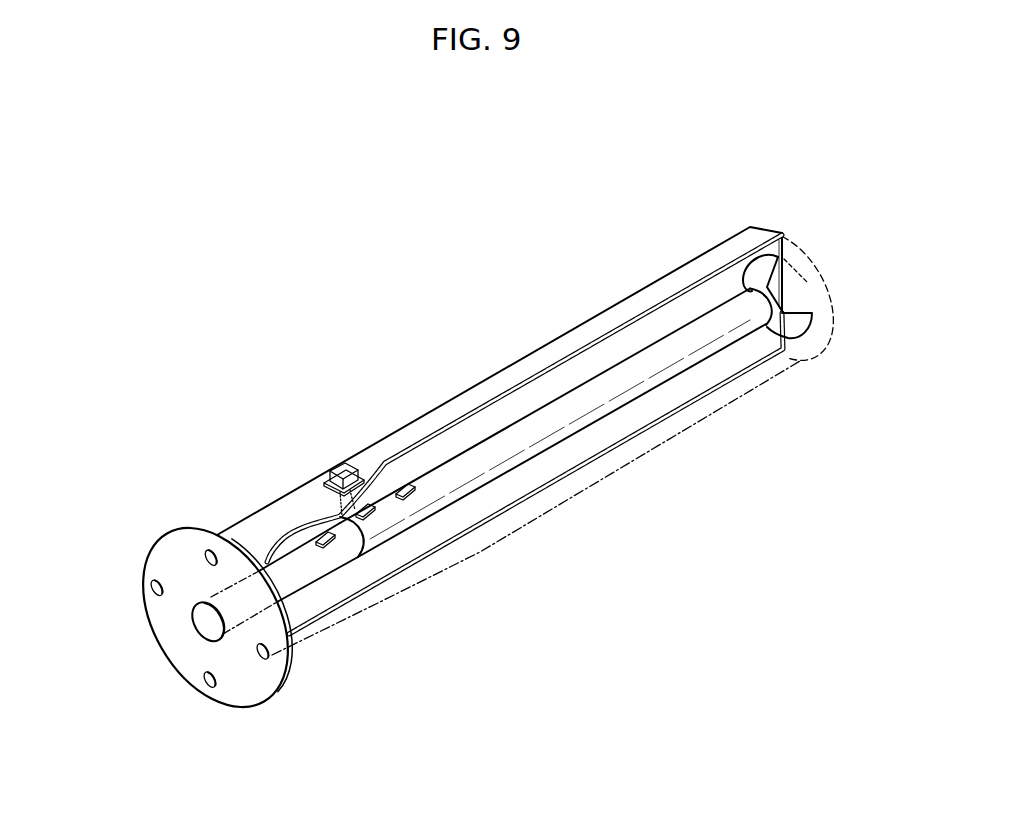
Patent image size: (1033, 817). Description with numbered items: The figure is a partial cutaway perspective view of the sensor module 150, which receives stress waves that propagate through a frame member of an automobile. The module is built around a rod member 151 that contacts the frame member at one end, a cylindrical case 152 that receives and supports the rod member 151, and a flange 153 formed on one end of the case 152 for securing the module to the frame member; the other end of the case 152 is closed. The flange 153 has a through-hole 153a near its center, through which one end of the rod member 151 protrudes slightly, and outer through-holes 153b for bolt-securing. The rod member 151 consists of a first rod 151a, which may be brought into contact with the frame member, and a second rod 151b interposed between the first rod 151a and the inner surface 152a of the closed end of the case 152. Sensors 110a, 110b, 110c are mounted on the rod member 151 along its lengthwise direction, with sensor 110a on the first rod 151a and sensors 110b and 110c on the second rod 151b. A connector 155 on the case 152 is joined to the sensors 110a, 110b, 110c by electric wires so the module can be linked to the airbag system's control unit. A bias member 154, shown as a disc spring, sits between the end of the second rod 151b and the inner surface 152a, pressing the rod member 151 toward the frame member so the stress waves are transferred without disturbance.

The sensor module 150 is at (296, 350).
The rod member 151 is at (422, 671).
The first rod 151a is at (330, 560).
The second rod 151b is at (413, 515).
The cylindrical case 152 is at (592, 333).
The inner surface 152a is at (771, 338).
The flange 153 is at (164, 546).
The through-hole 153a is at (270, 656).
The through-holes 153b is at (204, 688).
The bias member 154 is at (765, 254).
The connector 155 is at (335, 470).
The sensor 110a is at (316, 533).
The sensor 110b is at (366, 502).
The sensor 110c is at (408, 485).